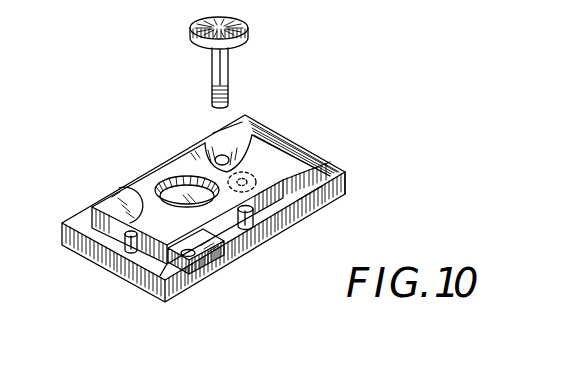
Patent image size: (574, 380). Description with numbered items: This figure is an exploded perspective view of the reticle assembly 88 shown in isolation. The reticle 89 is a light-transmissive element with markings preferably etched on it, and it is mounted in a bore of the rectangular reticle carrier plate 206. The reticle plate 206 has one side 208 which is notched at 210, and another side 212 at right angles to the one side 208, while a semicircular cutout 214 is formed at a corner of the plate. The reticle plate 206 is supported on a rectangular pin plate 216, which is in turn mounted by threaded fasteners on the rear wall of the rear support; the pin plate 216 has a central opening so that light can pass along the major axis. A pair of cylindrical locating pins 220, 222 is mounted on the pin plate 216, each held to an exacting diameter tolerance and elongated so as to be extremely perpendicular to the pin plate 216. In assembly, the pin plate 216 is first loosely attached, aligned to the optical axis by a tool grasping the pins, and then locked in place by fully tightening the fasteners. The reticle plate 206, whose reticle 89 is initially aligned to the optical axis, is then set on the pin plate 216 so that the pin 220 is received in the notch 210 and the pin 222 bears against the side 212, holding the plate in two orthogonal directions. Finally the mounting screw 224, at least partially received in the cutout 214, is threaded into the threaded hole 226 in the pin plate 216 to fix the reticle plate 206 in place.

The reticle assembly 88 is at (172, 146).
The reticle 89 is at (200, 204).
The reticle carrier plate 206 is at (322, 209).
The one side 208 is at (150, 257).
The notch 210 is at (138, 197).
The another side 212 is at (172, 283).
The semicircular cutout 214 is at (290, 143).
The pin plate 216 is at (348, 173).
The locating pin 220 is at (124, 243).
The locating pin 222 is at (252, 215).
The mounting screw 224 is at (225, 67).
The threaded hole 226 is at (222, 153).